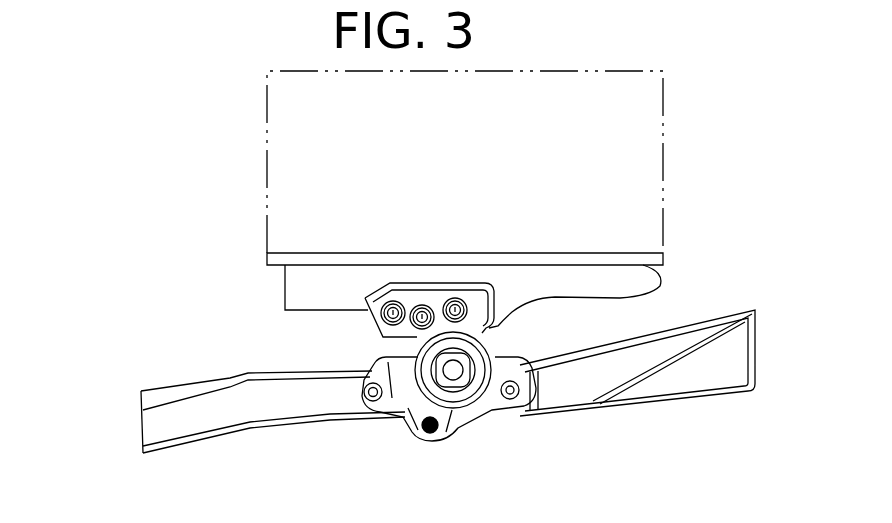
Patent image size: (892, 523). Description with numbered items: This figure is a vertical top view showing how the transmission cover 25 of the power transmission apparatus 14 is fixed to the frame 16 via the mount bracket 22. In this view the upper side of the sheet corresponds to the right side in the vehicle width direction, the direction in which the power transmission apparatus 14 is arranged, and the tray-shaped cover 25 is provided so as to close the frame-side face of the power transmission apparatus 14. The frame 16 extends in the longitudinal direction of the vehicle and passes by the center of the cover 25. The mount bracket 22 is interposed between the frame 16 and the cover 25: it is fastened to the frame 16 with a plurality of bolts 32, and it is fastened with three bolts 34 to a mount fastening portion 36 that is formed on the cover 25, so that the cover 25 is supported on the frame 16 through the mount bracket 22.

The power transmission apparatus 14 is at (293, 172).
The frame 16 is at (696, 378).
The mount bracket 22 is at (477, 430).
The transmission cover 25 is at (640, 281).
The bolts 32 is at (378, 405).
The bolts 34 is at (393, 304).
The mount fastening portion 36 is at (370, 329).